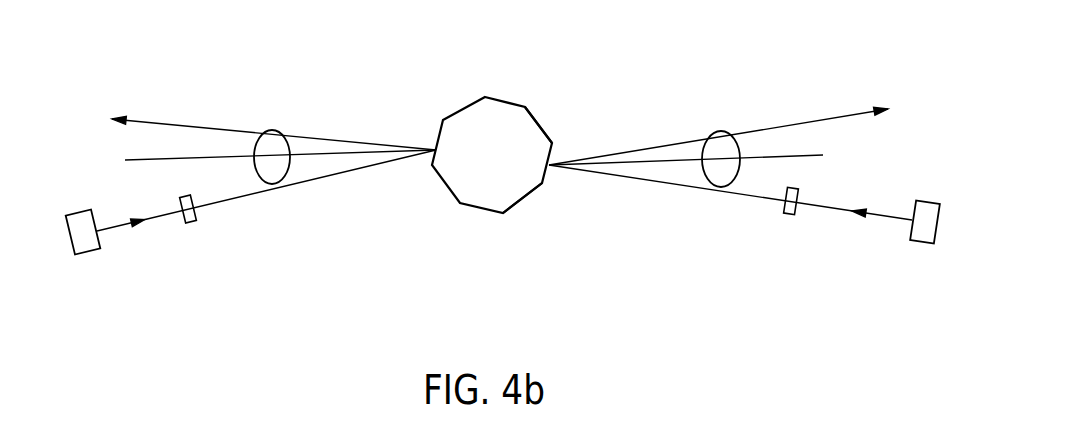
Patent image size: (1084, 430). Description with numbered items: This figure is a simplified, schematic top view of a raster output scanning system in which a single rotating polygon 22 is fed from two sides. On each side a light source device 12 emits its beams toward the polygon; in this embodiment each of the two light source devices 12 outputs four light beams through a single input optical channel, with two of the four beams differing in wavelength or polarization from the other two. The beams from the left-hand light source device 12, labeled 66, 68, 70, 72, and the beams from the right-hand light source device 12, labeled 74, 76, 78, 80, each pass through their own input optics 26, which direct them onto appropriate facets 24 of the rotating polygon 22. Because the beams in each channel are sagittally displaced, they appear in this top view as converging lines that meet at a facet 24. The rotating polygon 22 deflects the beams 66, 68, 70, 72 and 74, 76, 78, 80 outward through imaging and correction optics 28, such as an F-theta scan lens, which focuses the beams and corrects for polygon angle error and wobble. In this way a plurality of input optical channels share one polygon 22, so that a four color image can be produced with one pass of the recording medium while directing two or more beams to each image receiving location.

The light source device 12 is at (88, 255).
The rotating polygon 22 is at (495, 105).
The facets 24 is at (537, 120).
The input optics 26 is at (188, 223).
The imaging and correction optics 28 is at (272, 131).
The light beam 66 is at (266, 184).
The light beam 68 is at (274, 133).
The light beam 70 is at (280, 155).
The light beam 72 is at (248, 195).
The light beam 74 is at (730, 190).
The light beam 76 is at (718, 136).
The light beam 78 is at (686, 160).
The light beam 80 is at (730, 192).